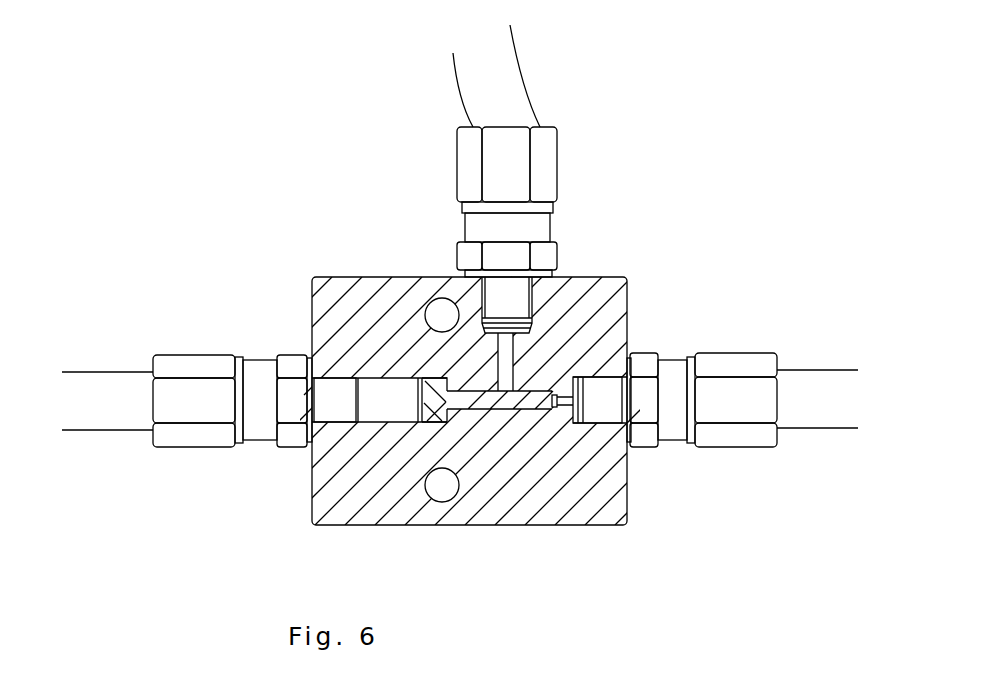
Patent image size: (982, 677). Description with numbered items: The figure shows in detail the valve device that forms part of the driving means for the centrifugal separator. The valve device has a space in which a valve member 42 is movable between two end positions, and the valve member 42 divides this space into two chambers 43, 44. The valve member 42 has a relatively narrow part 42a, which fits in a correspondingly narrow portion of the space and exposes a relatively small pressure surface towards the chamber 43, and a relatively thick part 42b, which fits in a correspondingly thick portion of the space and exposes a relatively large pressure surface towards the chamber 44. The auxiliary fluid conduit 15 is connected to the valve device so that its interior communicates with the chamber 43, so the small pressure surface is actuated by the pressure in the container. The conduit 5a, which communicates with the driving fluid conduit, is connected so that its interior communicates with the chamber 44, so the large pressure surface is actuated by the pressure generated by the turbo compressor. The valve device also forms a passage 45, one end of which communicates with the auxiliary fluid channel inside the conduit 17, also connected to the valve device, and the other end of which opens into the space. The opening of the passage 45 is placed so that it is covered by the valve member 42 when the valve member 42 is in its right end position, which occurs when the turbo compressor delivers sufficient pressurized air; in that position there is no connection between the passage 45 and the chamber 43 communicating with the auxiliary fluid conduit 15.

The conduit 5a is at (100, 408).
The auxiliary fluid conduit 15 is at (815, 385).
The second conduit 17 is at (505, 92).
The valve member 42 is at (493, 400).
The relatively narrow part 42a is at (540, 393).
The relatively thick part 42b is at (431, 396).
The chamber 43 is at (560, 409).
The chamber 44 is at (380, 395).
The passage 45 is at (509, 346).